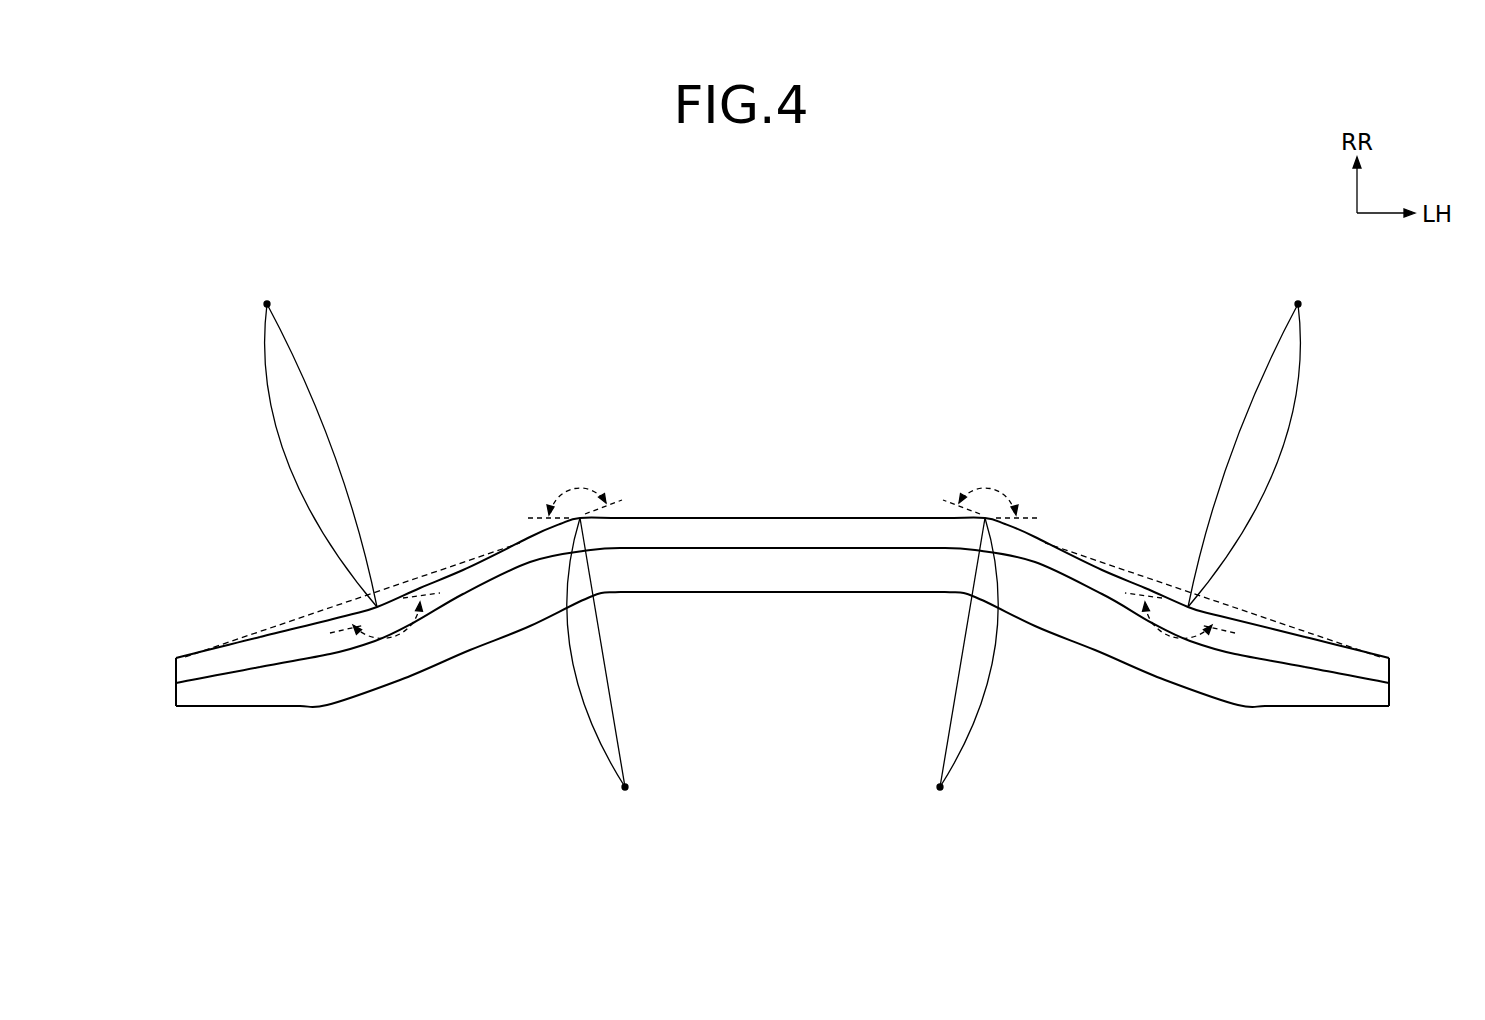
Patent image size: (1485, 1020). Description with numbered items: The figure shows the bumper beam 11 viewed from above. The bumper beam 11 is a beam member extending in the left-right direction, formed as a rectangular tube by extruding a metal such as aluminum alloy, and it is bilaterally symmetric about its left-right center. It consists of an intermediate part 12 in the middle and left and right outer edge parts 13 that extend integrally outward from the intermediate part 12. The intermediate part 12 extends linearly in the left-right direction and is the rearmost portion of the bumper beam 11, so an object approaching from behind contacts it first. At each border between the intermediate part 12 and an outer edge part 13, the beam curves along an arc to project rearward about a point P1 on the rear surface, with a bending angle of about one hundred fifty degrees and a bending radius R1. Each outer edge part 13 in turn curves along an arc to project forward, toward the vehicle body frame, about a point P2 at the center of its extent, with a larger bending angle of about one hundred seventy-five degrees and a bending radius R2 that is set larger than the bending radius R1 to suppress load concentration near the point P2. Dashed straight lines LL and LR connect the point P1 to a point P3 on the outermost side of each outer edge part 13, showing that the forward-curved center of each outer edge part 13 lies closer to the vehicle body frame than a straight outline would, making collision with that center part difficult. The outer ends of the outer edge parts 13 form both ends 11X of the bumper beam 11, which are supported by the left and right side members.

The bumper beam 11 is at (783, 537).
The intermediate part 12 is at (790, 522).
The outer edge parts 13 is at (433, 657).
The ends of the bumper beam 11X is at (197, 675).
The point P1 is at (590, 525).
The point P2 is at (382, 602).
The point P3 is at (181, 648).
The bending radius R1 is at (783, 654).
The bending radius R2 is at (782, 454).
The straight line LL is at (279, 625).
The straight line LR is at (1288, 625).